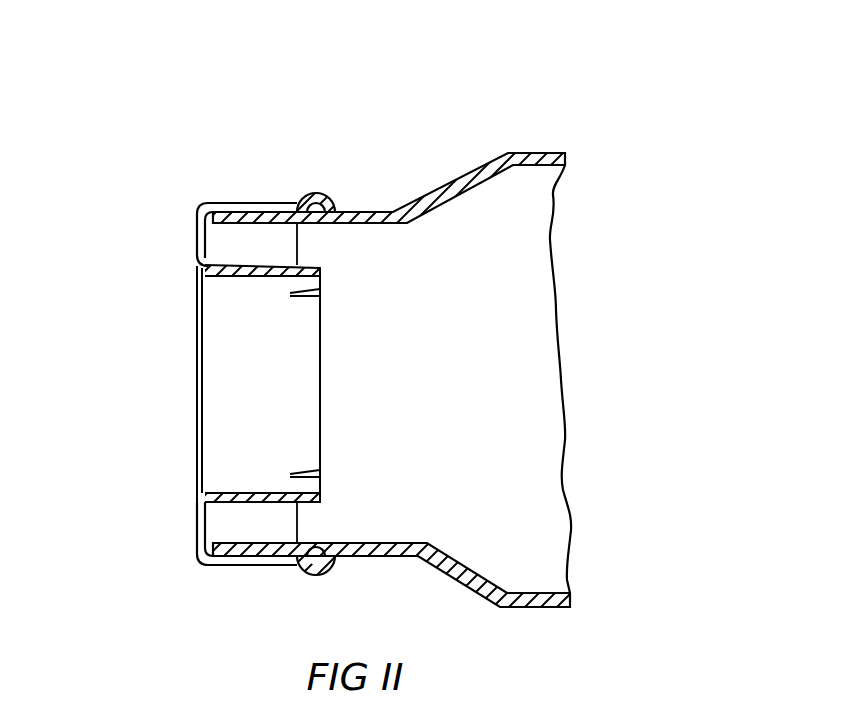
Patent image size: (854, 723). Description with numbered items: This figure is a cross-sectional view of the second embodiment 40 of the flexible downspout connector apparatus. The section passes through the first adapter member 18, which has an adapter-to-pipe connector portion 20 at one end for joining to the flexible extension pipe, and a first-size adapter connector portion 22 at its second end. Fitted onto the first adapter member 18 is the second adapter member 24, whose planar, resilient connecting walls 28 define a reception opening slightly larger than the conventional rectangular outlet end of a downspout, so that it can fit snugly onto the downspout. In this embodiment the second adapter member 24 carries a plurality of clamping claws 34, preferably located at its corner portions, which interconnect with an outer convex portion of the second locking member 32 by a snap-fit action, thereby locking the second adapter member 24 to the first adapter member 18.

The second embodiment 40 is at (195, 150).
The first adapter member 18 is at (467, 150).
The adapter-to-pipe connector portion 20 is at (552, 152).
The first-size adapter connector portion 22 is at (385, 212).
The second adapter member 24 is at (186, 247).
The planar resilient connecting walls 28 is at (262, 278).
The second locking member 32 is at (327, 225).
The clamping claws 34 is at (325, 195).